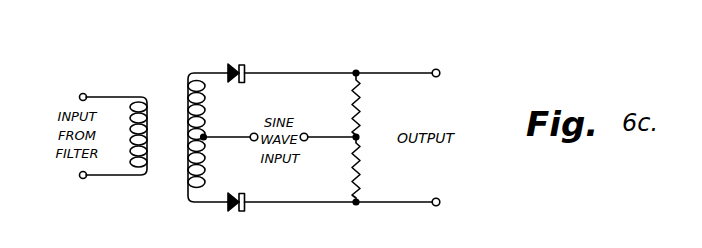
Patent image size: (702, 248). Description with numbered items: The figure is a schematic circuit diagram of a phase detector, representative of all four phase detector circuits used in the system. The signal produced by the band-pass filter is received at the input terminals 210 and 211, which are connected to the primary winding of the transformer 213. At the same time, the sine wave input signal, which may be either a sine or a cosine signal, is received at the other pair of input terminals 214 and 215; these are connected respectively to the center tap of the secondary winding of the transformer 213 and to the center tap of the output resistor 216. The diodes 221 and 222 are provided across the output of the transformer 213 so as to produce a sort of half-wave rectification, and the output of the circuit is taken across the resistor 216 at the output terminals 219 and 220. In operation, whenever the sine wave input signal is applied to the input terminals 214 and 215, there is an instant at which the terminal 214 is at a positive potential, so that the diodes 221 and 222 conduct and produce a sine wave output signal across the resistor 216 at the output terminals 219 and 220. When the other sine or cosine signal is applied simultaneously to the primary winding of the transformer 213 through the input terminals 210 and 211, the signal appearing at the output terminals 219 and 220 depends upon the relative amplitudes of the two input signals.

The input terminal 210 is at (86, 94).
The input terminal 211 is at (82, 178).
The transformer 213 is at (170, 100).
The input terminal 214 is at (251, 140).
The input terminal 215 is at (306, 133).
The output resistor 216 is at (362, 101).
The output terminal 219 is at (440, 72).
The output terminal 220 is at (440, 201).
The diode 221 is at (245, 66).
The diode 222 is at (245, 209).